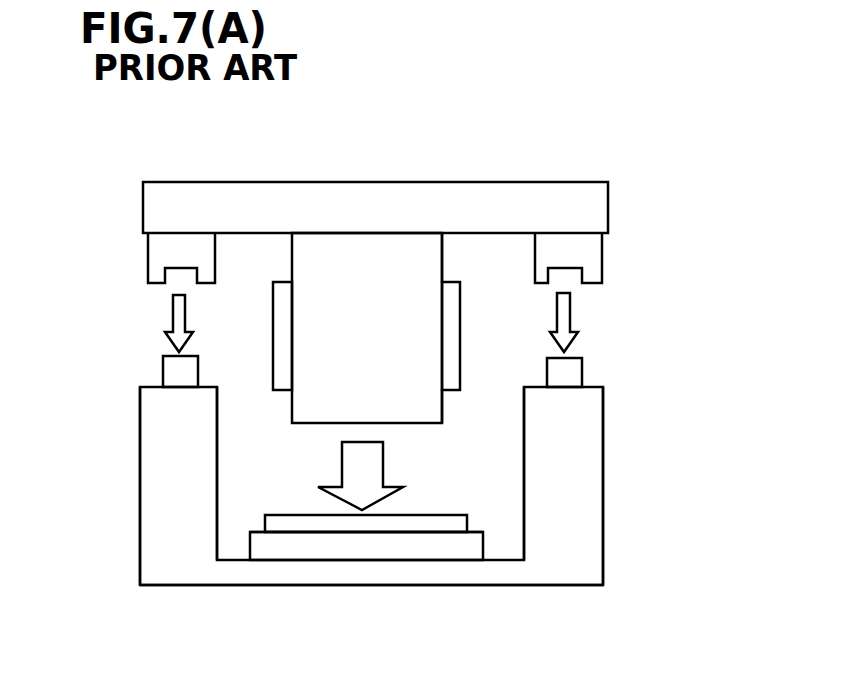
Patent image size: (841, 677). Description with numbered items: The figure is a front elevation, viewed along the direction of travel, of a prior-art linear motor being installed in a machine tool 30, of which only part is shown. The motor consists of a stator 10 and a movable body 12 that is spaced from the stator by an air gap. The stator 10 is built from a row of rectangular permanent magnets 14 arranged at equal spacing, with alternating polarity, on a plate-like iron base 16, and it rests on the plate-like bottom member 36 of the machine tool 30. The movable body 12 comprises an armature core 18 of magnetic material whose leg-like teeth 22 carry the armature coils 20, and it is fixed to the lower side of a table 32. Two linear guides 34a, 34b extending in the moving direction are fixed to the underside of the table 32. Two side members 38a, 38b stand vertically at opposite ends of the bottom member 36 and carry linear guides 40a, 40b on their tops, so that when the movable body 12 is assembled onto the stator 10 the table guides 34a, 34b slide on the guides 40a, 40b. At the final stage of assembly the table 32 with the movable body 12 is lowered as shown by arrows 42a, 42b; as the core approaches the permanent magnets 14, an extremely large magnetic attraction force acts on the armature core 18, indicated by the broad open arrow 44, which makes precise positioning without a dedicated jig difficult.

The stator 10 is at (247, 524).
The movable body 12 is at (351, 341).
The permanent magnets 14 is at (440, 523).
The iron base 16 is at (362, 547).
The armature core 18 is at (415, 257).
The armature coils 20 is at (450, 327).
The teeth 22 is at (428, 402).
The machine tool 30 is at (605, 548).
The table 32 is at (422, 200).
The linear guide 34a is at (170, 245).
The linear guide 34b is at (585, 248).
The bottom member 36 is at (443, 573).
The side member 38a is at (175, 482).
The side member 38b is at (585, 482).
The linear guide 40a is at (178, 372).
The linear guide 40b is at (570, 375).
The arrow 42a is at (172, 322).
The arrow 42b is at (567, 322).
The broad open arrow 44 is at (355, 463).